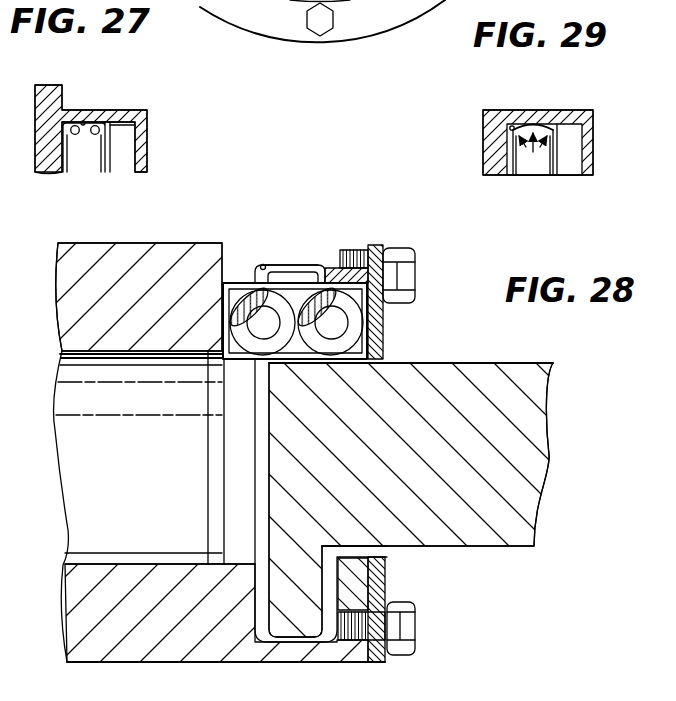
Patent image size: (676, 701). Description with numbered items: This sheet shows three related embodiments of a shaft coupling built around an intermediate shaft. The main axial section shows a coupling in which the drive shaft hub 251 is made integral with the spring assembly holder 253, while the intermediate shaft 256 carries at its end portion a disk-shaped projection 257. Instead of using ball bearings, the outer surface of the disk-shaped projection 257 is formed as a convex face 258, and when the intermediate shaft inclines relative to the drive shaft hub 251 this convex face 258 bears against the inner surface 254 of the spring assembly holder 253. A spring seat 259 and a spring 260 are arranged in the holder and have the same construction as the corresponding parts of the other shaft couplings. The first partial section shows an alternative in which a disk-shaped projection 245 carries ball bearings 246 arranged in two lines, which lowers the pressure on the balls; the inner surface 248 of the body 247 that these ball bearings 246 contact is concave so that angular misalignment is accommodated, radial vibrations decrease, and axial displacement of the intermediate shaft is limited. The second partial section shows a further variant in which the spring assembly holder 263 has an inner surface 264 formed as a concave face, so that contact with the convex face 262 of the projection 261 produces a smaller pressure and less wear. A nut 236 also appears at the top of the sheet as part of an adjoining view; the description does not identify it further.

In FIG. 27, the nut 236 is at (216, 12).
In FIG. 27, the disk-shaped projection 245 is at (86, 176).
In FIG. 27, the ball bearings 246 is at (97, 125).
In FIG. 27, the body 247 is at (139, 112).
In FIG. 27, the inner surface 248 is at (82, 121).
In FIG. 28, the drive shaft hub 251 is at (134, 258).
In FIG. 28, the spring assembly holder 253 is at (304, 278).
In FIG. 28, the inner surface 254 is at (260, 265).
In FIG. 28, the intermediate shaft 256 is at (472, 373).
In FIG. 28, the disk-shaped projection 257 is at (296, 263).
In FIG. 28, the convex face 258 is at (277, 266).
In FIG. 28, the spring seat 259 is at (358, 345).
In FIG. 28, the spring 260 is at (353, 320).
In FIG. 29, the projection 261 is at (541, 162).
In FIG. 29, the convex face 262 is at (543, 125).
In FIG. 29, the spring assembly holder 263 is at (486, 122).
In FIG. 29, the inner surface 264 is at (511, 126).